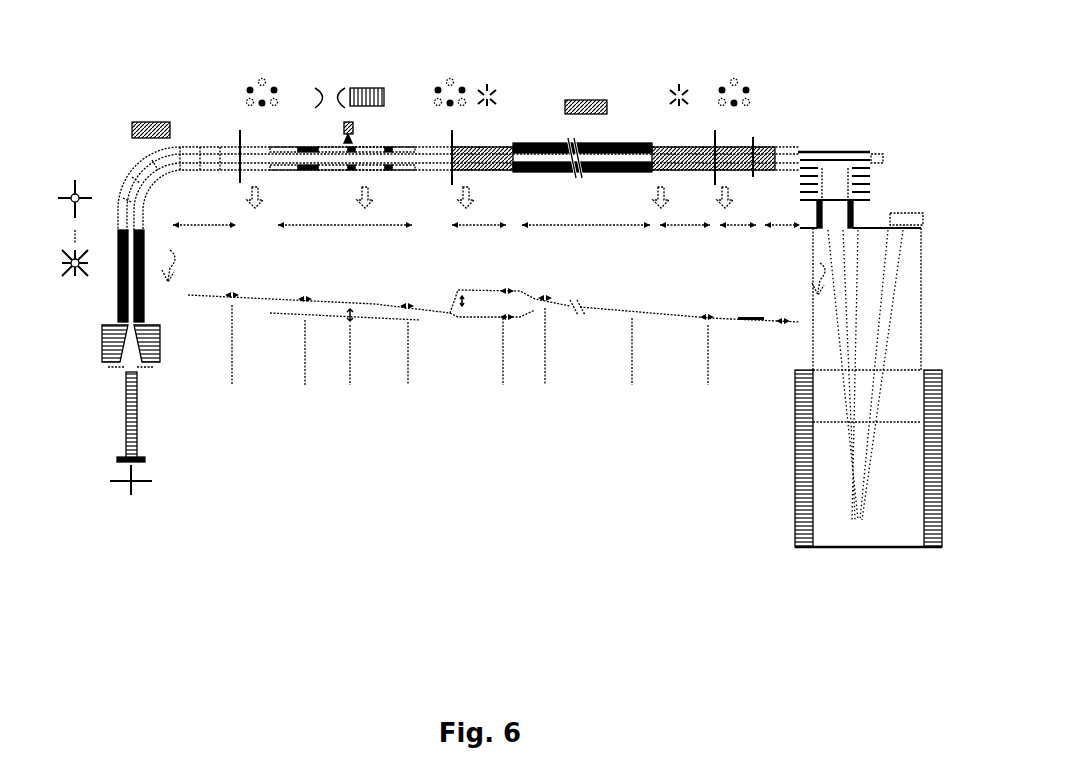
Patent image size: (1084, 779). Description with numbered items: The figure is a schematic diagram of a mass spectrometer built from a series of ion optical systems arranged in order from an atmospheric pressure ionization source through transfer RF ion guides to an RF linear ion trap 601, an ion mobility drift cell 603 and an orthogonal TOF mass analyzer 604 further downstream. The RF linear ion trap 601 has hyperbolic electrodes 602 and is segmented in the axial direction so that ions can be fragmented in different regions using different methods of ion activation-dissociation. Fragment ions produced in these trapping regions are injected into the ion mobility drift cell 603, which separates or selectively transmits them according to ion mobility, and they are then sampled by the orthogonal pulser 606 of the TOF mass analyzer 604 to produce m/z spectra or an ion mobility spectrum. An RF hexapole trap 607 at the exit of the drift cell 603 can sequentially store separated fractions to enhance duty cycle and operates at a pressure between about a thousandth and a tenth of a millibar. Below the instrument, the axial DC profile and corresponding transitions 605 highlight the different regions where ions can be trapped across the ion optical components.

The RF linear ion trap 601 is at (383, 140).
The hyperbolic electrodes 602 is at (308, 80).
The ion mobility drift cell 603 is at (612, 137).
The TOF mass analyzer 604 is at (783, 463).
The axial DC profile and corresponding transitions 605 is at (452, 422).
The orthogonal pulser 606 is at (876, 152).
The RF hexapole trap 607 is at (690, 148).